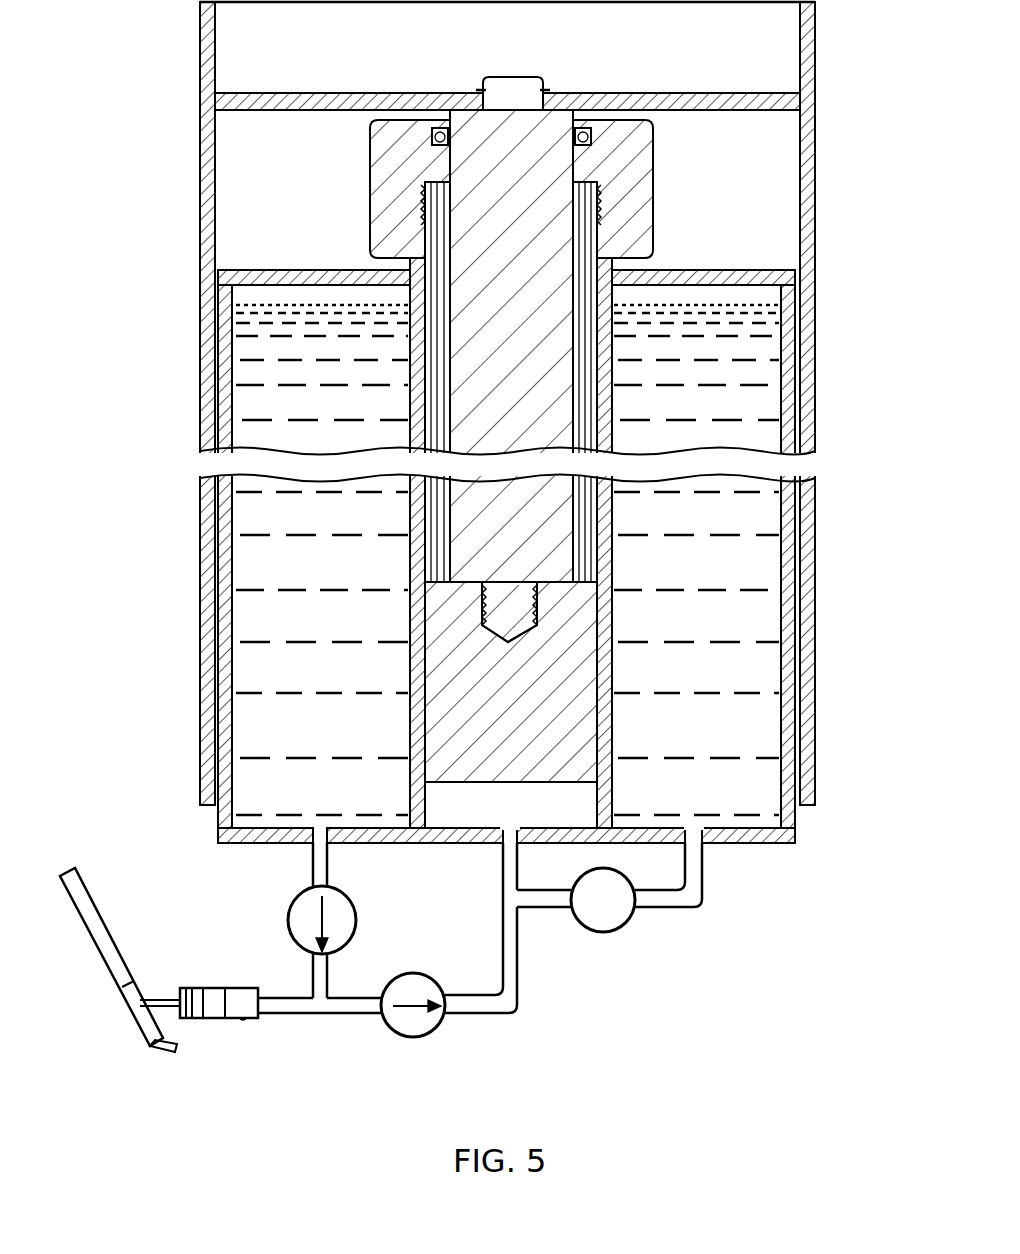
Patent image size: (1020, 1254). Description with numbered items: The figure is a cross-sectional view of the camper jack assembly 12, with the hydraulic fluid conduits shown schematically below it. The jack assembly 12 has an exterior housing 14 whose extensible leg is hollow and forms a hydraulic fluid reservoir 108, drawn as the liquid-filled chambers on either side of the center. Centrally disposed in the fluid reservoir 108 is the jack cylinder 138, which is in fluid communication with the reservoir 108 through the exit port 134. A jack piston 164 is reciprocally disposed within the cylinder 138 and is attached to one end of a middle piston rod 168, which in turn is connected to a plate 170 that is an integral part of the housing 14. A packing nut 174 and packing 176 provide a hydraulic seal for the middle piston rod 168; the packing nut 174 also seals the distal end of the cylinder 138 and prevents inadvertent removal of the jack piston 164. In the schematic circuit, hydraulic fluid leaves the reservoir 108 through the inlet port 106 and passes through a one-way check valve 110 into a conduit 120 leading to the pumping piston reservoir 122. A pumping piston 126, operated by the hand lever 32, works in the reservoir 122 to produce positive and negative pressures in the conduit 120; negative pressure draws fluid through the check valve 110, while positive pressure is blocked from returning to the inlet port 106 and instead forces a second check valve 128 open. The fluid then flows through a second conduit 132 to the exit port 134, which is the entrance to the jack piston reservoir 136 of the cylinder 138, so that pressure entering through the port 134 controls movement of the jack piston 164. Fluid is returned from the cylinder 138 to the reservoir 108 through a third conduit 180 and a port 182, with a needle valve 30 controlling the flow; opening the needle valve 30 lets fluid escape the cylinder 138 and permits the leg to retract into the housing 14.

The jack assembly 12 is at (185, 345).
The exterior housing 14 is at (818, 258).
The needle valve 30 is at (612, 922).
The pump lever 32 is at (143, 1000).
The inlet port 106 is at (320, 833).
The fluid reservoir 108 is at (245, 697).
The check valve 110 is at (338, 905).
The conduit 120 is at (325, 968).
The pumping piston reservoir 122 is at (248, 1018).
The pumping piston 126 is at (215, 1005).
The second check valve 128 is at (428, 990).
The second conduit 132 is at (518, 962).
The exit port 134 is at (508, 835).
The jack piston reservoir 136 is at (600, 802).
The jack cylinder 138 is at (600, 582).
The jack piston 164 is at (555, 690).
The middle piston rod 168 is at (555, 420).
The plate 170 is at (668, 95).
The packing nut 174 is at (655, 225).
The packing 176 is at (628, 142).
The third conduit 180 is at (702, 875).
The port 182 is at (694, 835).